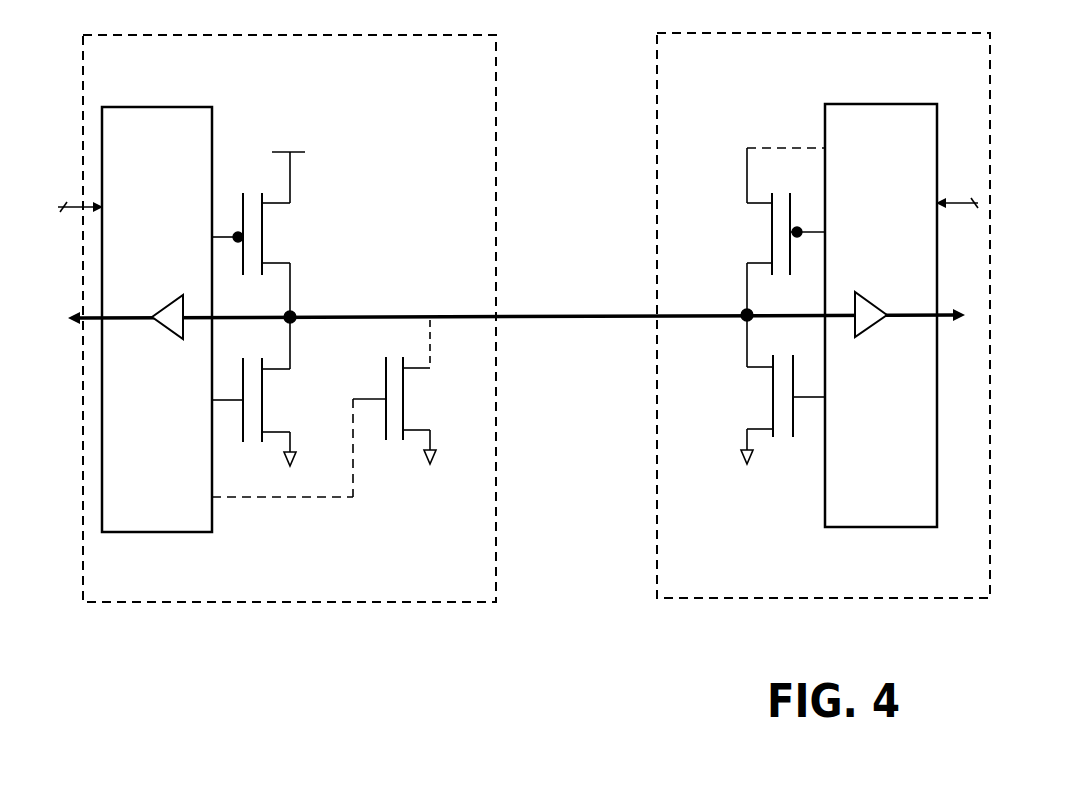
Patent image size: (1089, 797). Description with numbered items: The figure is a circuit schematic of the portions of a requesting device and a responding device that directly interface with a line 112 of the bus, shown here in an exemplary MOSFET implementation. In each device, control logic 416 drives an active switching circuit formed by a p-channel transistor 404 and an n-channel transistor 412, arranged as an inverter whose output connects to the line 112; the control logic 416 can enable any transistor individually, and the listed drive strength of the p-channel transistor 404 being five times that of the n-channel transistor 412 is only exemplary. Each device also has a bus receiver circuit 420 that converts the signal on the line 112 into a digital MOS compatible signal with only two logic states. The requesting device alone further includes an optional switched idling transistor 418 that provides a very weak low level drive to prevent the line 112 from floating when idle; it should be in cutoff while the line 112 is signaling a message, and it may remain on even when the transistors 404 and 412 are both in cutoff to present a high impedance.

The line 112 is at (545, 316).
The control logic 416 is at (212, 107).
The bus receiver circuit 420 is at (165, 294).
The p-channel transistor 404 is at (290, 178).
The n-channel transistor 412 is at (290, 348).
The idling transistor 418 is at (430, 335).